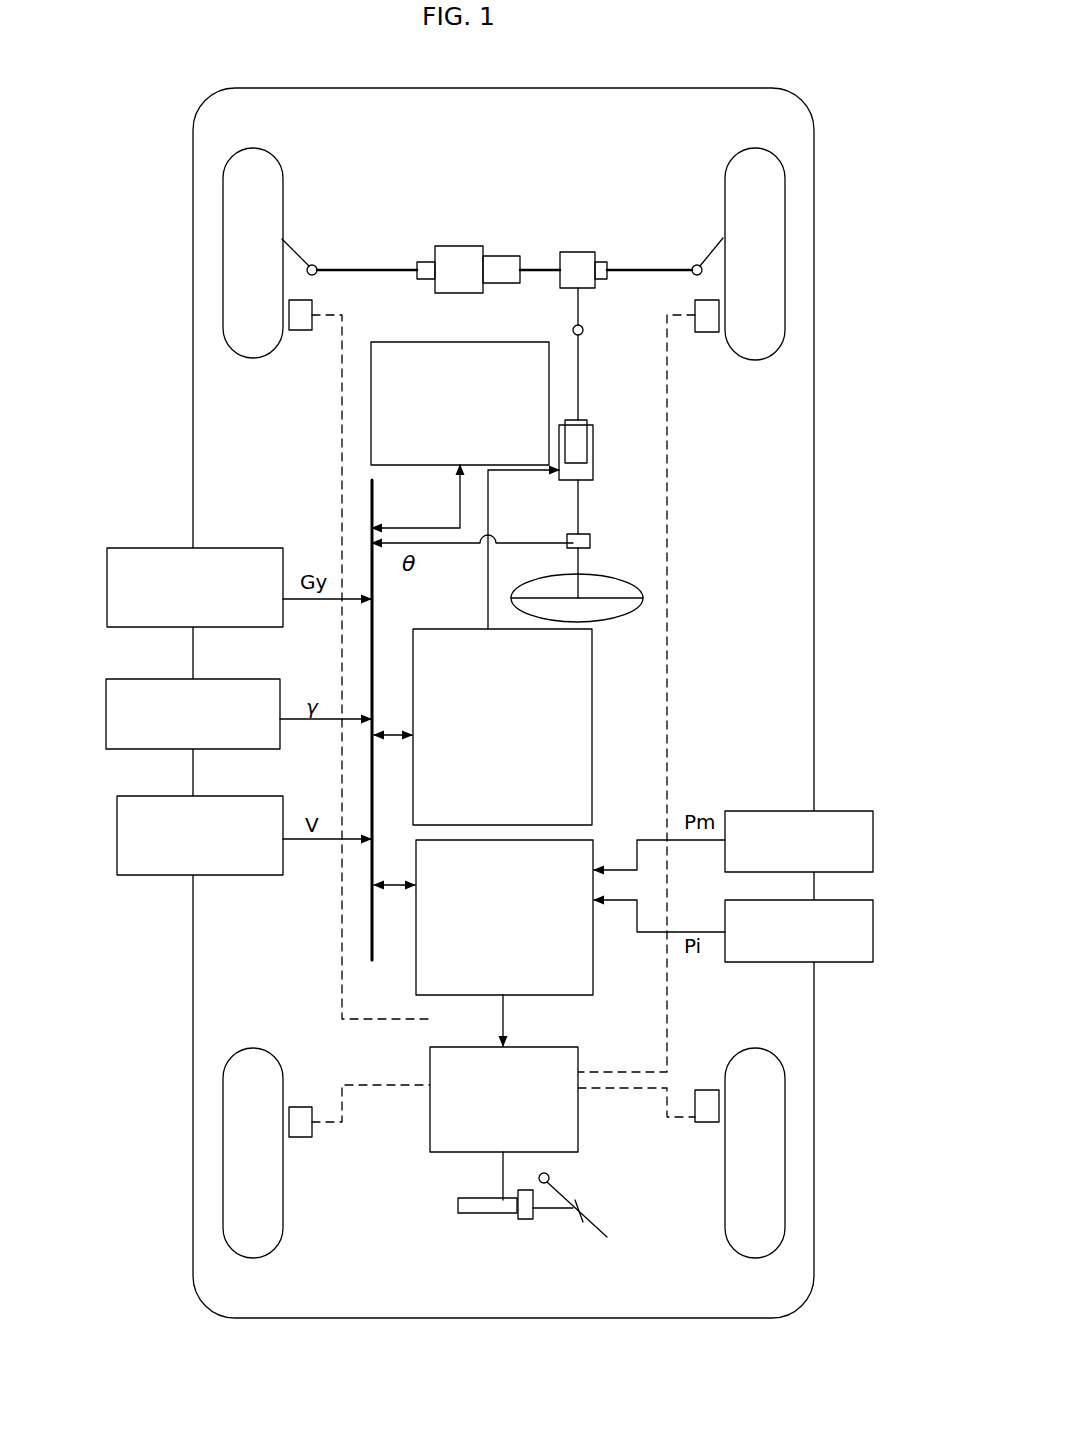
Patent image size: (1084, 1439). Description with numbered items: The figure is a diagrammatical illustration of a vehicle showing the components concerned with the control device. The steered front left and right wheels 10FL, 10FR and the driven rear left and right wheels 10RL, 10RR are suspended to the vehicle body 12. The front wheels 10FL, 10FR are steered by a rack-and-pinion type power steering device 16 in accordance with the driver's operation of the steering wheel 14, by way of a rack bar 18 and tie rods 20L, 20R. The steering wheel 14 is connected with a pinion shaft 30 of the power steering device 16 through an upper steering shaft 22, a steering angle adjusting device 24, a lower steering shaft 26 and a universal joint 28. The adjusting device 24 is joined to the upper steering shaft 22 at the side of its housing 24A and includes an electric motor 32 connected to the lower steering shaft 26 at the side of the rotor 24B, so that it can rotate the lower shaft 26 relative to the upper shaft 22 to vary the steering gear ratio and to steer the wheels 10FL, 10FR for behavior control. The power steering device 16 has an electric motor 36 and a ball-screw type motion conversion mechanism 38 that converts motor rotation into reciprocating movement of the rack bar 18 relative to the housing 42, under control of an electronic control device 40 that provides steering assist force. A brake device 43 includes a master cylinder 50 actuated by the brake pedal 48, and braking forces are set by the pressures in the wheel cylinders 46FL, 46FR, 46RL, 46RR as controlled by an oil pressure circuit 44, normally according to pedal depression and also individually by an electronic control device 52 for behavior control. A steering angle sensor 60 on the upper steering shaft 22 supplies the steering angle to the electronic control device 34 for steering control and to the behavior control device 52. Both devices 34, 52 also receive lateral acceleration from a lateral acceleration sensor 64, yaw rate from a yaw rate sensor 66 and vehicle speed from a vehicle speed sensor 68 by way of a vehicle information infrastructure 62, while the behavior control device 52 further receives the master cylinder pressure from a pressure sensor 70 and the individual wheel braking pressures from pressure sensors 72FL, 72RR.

The front left wheel 10FL is at (223, 268).
The front right wheel 10FR is at (785, 268).
The rear left wheel 10RL is at (225, 1159).
The rear right wheel 10RR is at (785, 1160).
The vehicle body 12 is at (814, 652).
The steering wheel 14 is at (615, 622).
The rack-and-pinion type power steering device 16 is at (502, 264).
The rack bar 18 is at (373, 270).
The tie rod 20L is at (296, 251).
The tie rod 20R is at (712, 244).
The upper steering shaft 22 is at (572, 565).
The steering angle adjusting device 24 is at (586, 473).
The housing 24A is at (595, 483).
The rotor 24B is at (583, 462).
The lower steering shaft 26 is at (578, 361).
The universal joint 28 is at (573, 330).
The pinion shaft 30 is at (578, 304).
The electric motor for modifying steering 32 is at (585, 434).
The electronic control device for the steering control 34 is at (502, 727).
The electric motor 36 is at (460, 246).
The ball-screw type motion conversion mechanism 38 is at (497, 283).
The electronic control device for controlling the electric power steering device 40 is at (460, 403).
The housing 42 is at (427, 282).
The brake device 43 is at (475, 1214).
The oil pressure circuit 44 is at (504, 1099).
The wheel cylinder 46FL is at (300, 330).
The wheel cylinder 46FR is at (707, 332).
The wheel cylinder 46RL is at (305, 1137).
The wheel cylinder 46RR is at (707, 1122).
The brake pedal 48 is at (575, 1203).
The master cylinder 50 is at (465, 1198).
The electronic control device for the behavior control 52 is at (504, 917).
The steering angle sensor 60 is at (590, 548).
The vehicle information infrastructure 62 is at (372, 931).
The lateral acceleration sensor 64 is at (224, 546).
The yaw rate sensor 66 is at (106, 725).
The vehicle speed sensor 68 is at (117, 847).
The pressure sensor 70 is at (784, 811).
The pressure sensor 72FL is at (795, 974).
The pressure sensor 72RR is at (752, 962).